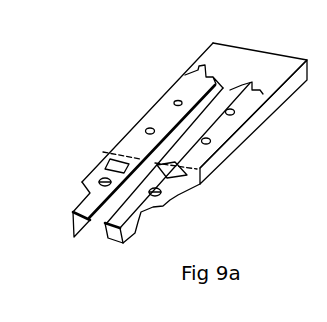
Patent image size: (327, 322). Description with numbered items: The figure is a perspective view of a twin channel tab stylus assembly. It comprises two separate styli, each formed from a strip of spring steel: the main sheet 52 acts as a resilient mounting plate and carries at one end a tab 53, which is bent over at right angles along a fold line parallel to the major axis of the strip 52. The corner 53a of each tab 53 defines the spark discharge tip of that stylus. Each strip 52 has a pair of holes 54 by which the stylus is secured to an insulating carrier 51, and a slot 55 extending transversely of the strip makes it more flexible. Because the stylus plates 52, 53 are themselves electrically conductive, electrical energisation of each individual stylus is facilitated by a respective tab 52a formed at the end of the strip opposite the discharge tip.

The insulating carrier 51 is at (278, 60).
The resilient mounting plate 52 is at (192, 97).
The tab 52a is at (252, 82).
The tab 53 is at (123, 242).
The corner 53a is at (82, 228).
The holes 54 is at (174, 103).
The slot 55 is at (110, 159).